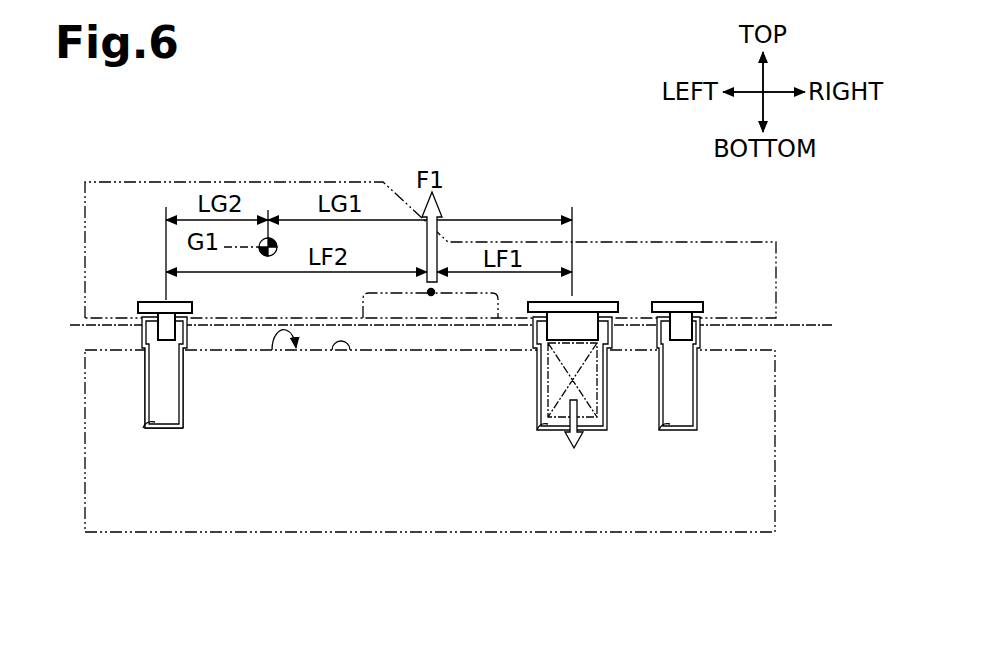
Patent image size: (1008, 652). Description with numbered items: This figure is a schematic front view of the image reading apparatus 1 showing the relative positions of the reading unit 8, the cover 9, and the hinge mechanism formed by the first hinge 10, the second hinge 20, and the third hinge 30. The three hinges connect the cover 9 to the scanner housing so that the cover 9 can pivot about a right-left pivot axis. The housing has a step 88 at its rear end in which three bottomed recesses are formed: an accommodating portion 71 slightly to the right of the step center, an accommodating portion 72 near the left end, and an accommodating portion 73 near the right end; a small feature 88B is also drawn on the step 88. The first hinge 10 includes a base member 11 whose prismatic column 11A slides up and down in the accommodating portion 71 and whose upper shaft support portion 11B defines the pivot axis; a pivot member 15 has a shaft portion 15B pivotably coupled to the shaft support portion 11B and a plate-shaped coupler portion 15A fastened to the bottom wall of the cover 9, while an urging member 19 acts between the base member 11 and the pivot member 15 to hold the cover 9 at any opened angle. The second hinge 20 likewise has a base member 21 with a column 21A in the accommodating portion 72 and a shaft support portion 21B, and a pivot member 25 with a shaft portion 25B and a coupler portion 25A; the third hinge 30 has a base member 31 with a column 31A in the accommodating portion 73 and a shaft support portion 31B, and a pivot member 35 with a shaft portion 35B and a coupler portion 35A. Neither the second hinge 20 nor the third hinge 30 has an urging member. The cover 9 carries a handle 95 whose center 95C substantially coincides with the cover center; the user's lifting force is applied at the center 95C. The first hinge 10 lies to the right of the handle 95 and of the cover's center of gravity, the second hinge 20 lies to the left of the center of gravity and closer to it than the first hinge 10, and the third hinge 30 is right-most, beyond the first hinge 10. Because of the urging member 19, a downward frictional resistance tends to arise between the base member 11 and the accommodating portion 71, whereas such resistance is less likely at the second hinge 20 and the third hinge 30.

The image reading apparatus 1 is at (500, 130).
The reading unit 8 is at (82, 362).
The cover 9 is at (82, 275).
The first hinge 10 is at (618, 302).
The base member 11 is at (665, 580).
The column 11A is at (601, 398).
The shaft support portion 11B is at (604, 333).
The pivot member 15 is at (676, 139).
The coupler portion 15A is at (607, 307).
The shaft portion 15B is at (578, 322).
The urging member 19 is at (552, 383).
The second hinge 20 is at (133, 302).
The base member 21 is at (245, 578).
The column 21A is at (167, 412).
The shaft support portion 21B is at (183, 332).
The pivot member 25 is at (169, 137).
The coupler portion 25A is at (163, 322).
The shaft portion 25B is at (157, 306).
The third hinge 30 is at (708, 302).
The base member 31 is at (785, 580).
The column 31A is at (680, 397).
The shaft support portion 31B is at (694, 333).
The pivot member 35 is at (750, 204).
The coupler portion 35A is at (696, 307).
The shaft portion 35B is at (681, 322).
The accommodating portion 71 is at (540, 424).
The accommodating portion 72 is at (148, 424).
The accommodating portion 73 is at (672, 424).
The step 88 is at (272, 350).
The lower member protrusion 88B is at (332, 350).
The handle 95 is at (403, 300).
The center 95C is at (431, 296).